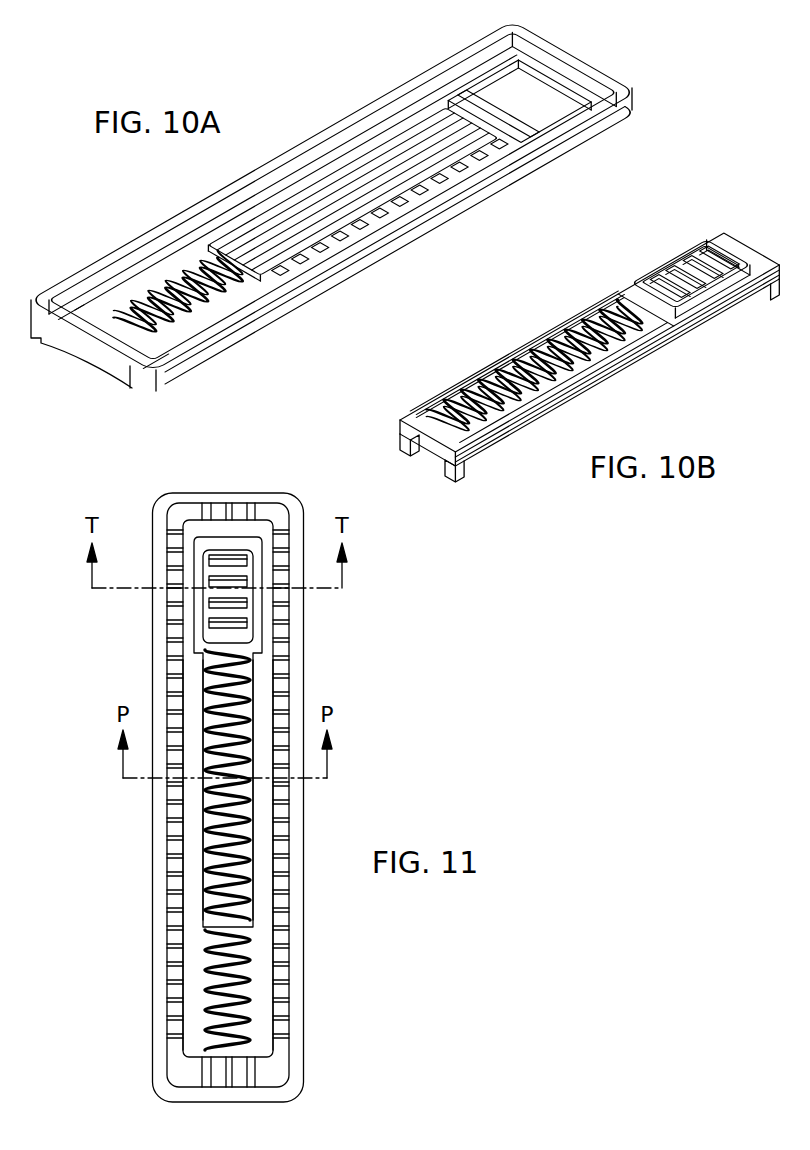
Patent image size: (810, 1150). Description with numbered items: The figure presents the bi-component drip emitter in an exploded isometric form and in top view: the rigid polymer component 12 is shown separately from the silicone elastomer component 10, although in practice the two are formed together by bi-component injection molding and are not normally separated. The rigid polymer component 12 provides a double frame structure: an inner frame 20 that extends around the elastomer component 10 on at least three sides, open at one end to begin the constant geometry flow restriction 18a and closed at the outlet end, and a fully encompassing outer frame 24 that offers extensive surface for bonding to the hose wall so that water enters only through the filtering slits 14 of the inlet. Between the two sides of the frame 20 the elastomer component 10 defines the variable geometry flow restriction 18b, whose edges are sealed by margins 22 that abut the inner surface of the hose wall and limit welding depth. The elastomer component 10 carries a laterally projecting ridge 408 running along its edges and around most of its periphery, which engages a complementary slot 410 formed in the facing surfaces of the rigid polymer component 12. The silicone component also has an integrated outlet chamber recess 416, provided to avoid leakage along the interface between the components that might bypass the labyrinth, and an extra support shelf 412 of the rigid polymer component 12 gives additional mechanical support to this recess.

In FIG. 10B, the elastomer component 10 is at (500, 445).
In FIG. 11, the elastomer component 10 is at (253, 653).
In FIG. 10A, the rigid polymer component 12 is at (220, 337).
In FIG. 11, the rigid polymer component 12 is at (304, 498).
In FIG. 10A, the slits 14 is at (90, 300).
In FIG. 11, the slits 14 is at (167, 687).
In FIG. 10A, the constant geometry flow restriction 18a is at (160, 268).
In FIG. 11, the constant geometry flow restriction 18a is at (240, 965).
In FIG. 10B, the variable geometry flow restriction 18b is at (570, 323).
In FIG. 11, the variable geometry flow restriction 18b is at (250, 717).
In FIG. 10A, the frame 20 is at (577, 82).
In FIG. 11, the frame 20 is at (197, 857).
In FIG. 10B, the margins 22 is at (507, 363).
In FIG. 11, the margins 22 is at (205, 852).
In FIG. 10A, the outer frame 24 is at (375, 228).
In FIG. 11, the outer frame 24 is at (160, 970).
In FIG. 10B, the laterally projecting ridge 408 is at (603, 367).
In FIG. 10A, the slot 410 is at (345, 150).
In FIG. 10A, the support shelf 412 is at (497, 87).
In FIG. 10B, the integrated outlet chamber recess 416 is at (677, 252).
In FIG. 11, the integrated outlet chamber recess 416 is at (230, 562).